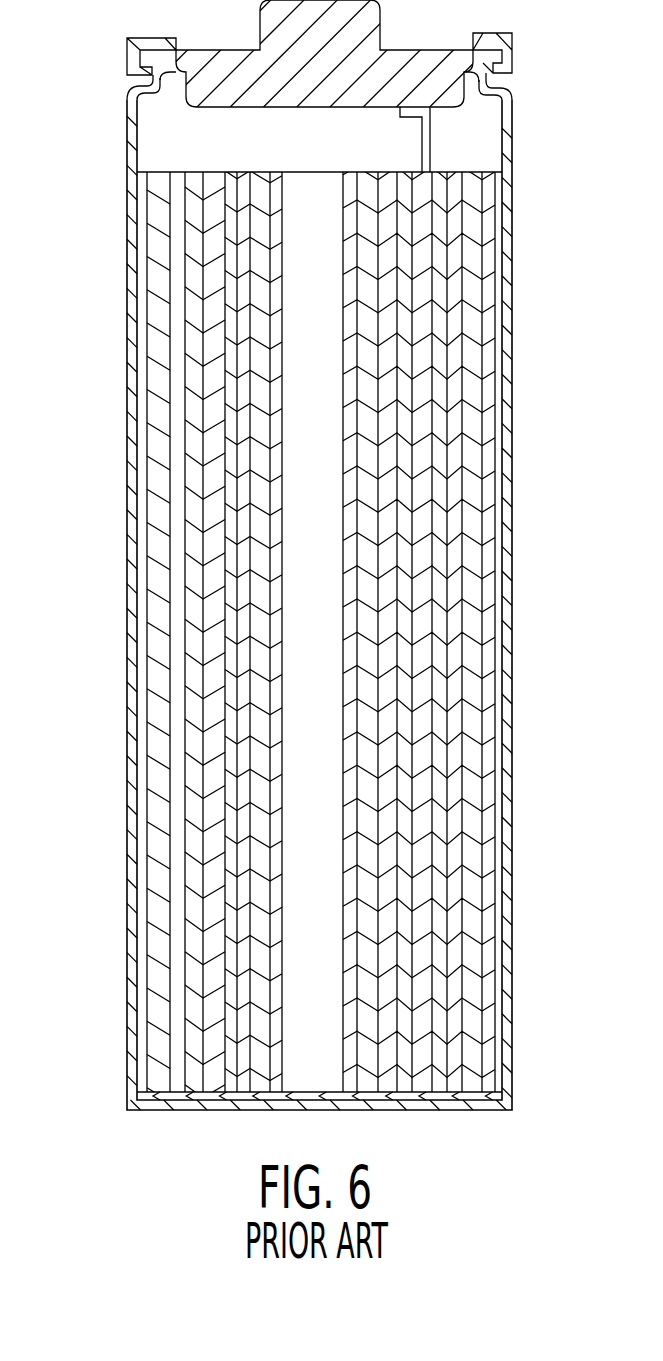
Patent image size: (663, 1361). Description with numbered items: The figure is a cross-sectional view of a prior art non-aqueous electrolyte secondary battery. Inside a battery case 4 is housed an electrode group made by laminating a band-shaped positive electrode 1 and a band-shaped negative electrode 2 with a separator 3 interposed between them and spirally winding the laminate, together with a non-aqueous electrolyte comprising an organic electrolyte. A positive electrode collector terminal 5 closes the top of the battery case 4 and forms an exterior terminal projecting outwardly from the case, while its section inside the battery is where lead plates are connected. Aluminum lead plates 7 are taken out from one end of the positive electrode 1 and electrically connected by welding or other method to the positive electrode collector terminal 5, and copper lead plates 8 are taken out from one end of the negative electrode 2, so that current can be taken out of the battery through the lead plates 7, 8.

The positive electrode 1 is at (440, 283).
The negative electrode 2 is at (158, 748).
The separator 3 is at (146, 570).
The battery case 4 is at (487, 568).
The positive electrode collector terminal 5 is at (397, 50).
The aluminum lead plates 7 is at (430, 147).
The copper lead plates 8 is at (148, 1095).